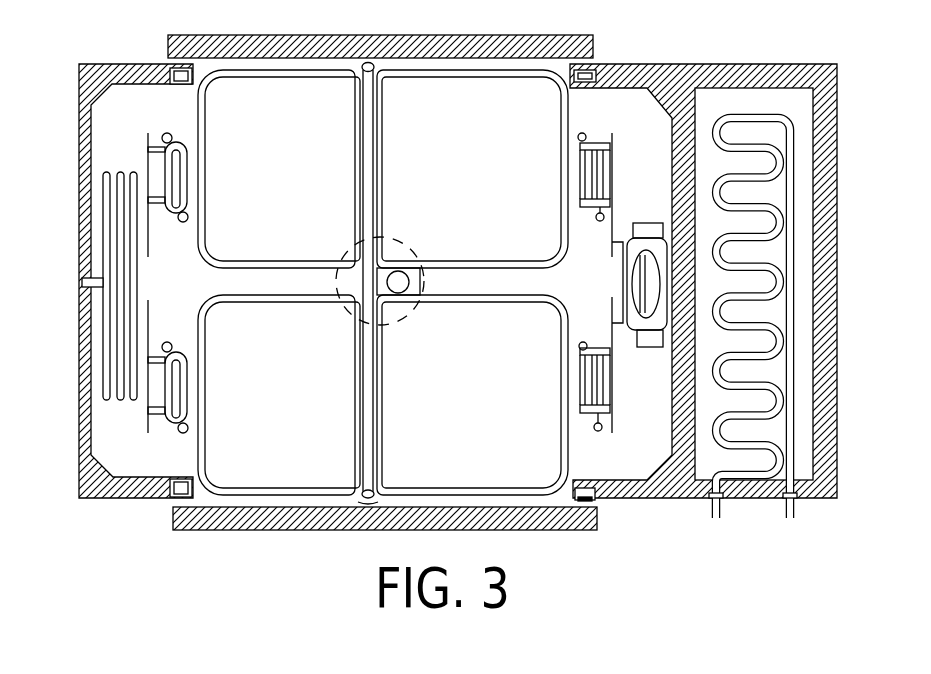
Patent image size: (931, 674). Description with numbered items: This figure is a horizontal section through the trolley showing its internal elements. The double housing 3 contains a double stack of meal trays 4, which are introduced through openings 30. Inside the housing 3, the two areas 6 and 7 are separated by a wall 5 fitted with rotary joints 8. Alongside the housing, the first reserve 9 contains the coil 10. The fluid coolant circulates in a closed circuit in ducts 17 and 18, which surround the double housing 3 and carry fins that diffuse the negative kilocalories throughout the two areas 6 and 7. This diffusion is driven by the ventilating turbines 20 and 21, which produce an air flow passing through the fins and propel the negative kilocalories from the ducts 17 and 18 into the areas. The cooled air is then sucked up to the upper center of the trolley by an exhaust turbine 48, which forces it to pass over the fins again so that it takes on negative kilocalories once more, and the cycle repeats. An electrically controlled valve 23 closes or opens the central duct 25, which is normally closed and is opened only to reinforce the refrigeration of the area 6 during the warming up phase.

The housing 3 is at (207, 64).
The meal trays 4 is at (480, 72).
The wall 5 is at (364, 150).
The area 6 is at (535, 393).
The area 7 is at (285, 394).
The rotary joints 8 is at (355, 122).
The first reserve 9 is at (753, 98).
The coil 10 is at (785, 348).
The duct 17 is at (605, 123).
The duct 18 is at (168, 342).
The turbine 20 is at (640, 222).
The turbine 21 is at (100, 228).
The electrically controlled valve 23 is at (402, 293).
The central duct 25 is at (425, 283).
The openings 30 is at (180, 43).
The exhaust turbine 48 is at (400, 240).